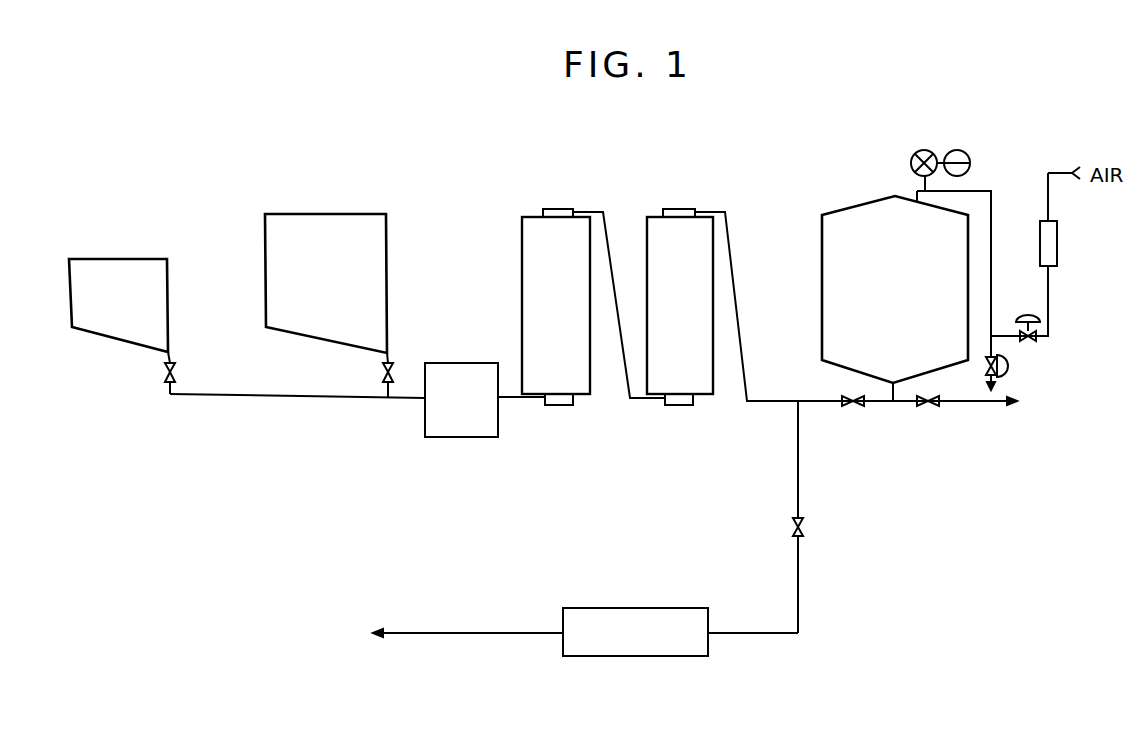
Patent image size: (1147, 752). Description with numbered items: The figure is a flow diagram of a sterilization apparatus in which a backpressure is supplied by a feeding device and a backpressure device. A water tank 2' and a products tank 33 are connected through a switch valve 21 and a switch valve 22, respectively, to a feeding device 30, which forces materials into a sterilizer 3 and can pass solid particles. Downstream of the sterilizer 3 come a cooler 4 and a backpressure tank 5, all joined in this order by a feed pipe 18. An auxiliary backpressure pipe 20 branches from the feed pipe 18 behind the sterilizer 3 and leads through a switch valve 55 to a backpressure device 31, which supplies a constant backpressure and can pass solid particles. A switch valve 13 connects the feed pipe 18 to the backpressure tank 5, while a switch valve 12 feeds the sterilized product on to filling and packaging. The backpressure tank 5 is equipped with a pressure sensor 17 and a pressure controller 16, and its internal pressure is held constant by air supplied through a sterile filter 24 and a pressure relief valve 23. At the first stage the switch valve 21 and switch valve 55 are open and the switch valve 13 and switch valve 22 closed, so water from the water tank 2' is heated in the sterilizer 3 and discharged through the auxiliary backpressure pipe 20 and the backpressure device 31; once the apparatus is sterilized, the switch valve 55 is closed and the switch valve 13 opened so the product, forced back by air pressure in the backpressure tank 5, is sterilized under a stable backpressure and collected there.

The water tank 2' is at (118, 270).
The products tank 33 is at (317, 213).
The switch valve 21 is at (164, 371).
The switch valve 22 is at (382, 371).
The feeding device 30 is at (460, 438).
The sterilizer 3 is at (537, 216).
The cooler 4 is at (655, 216).
The feed pipe 18 is at (767, 397).
The switch valve 13 is at (850, 407).
The switch valve 12 is at (924, 407).
The backpressure tank 5 is at (820, 227).
The pressure sensor 17 is at (912, 160).
The pressure controller 16 is at (970, 160).
The sterile filter 24 is at (1058, 248).
The pressure relief valve 23 is at (1036, 382).
The auxiliary backpressure pipe 20 is at (803, 482).
The switch valve 55 is at (802, 526).
The backpressure device 31 is at (630, 608).